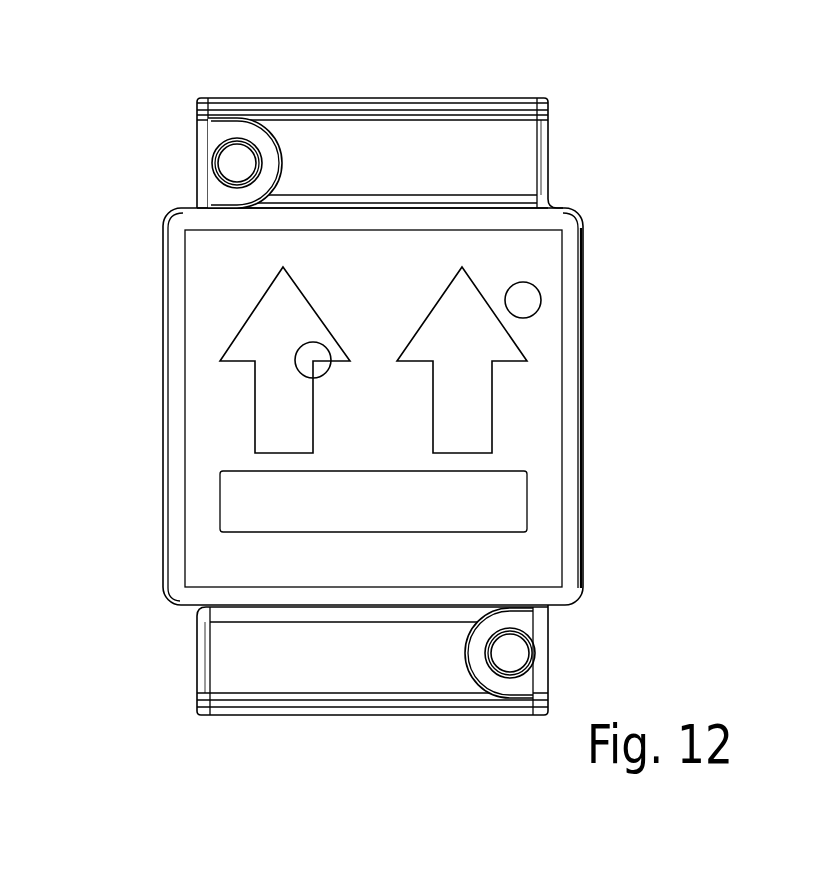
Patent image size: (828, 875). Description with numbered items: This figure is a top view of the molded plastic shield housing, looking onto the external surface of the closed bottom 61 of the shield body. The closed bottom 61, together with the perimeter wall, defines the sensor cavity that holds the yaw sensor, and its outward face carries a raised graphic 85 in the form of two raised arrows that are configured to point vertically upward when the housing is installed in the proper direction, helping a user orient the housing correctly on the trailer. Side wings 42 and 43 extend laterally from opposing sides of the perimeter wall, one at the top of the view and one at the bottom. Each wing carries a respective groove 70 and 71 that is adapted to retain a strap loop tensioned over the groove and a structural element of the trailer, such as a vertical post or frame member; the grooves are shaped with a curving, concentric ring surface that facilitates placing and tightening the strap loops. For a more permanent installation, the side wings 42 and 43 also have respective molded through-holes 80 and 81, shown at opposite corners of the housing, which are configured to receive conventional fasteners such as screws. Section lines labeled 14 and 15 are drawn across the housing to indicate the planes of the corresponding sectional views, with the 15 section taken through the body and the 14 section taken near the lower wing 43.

The section line 14- 14 is at (197, 655).
The section line 15- 15 is at (163, 345).
The side wing 42 is at (518, 155).
The side wing 43 is at (268, 675).
The closed bottom 61 is at (535, 445).
The groove 70 is at (373, 138).
The groove 71 is at (380, 673).
The through-hole 80 is at (227, 163).
The through-hole 81 is at (505, 655).
The raised graphic 85 is at (268, 416).